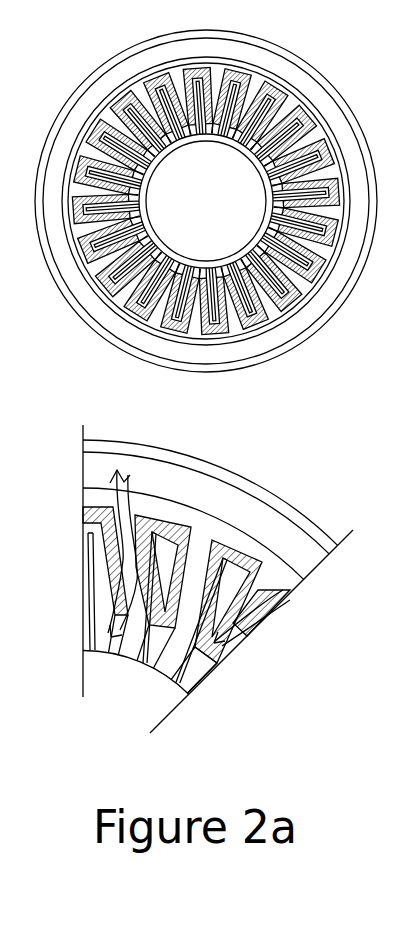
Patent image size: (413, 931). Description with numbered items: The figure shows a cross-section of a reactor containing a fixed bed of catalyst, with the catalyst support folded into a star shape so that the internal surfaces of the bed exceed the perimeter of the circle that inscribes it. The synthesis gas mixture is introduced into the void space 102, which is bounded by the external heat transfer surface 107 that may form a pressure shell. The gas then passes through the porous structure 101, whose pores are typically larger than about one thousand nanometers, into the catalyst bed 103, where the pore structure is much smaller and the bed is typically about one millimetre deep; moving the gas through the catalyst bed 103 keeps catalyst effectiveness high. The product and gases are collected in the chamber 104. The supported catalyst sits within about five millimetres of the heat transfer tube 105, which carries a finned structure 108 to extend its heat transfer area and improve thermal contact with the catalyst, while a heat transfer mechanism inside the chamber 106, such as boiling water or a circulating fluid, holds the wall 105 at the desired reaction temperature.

The porous structure 101 is at (200, 531).
The void space 102 is at (313, 555).
The catalyst bed 103 is at (262, 620).
The chamber 104 is at (215, 668).
The heat transfer tube 105 is at (193, 690).
The chamber 106 is at (153, 715).
The external heat transfer surface 107 is at (290, 499).
The finned structure 108 is at (205, 675).